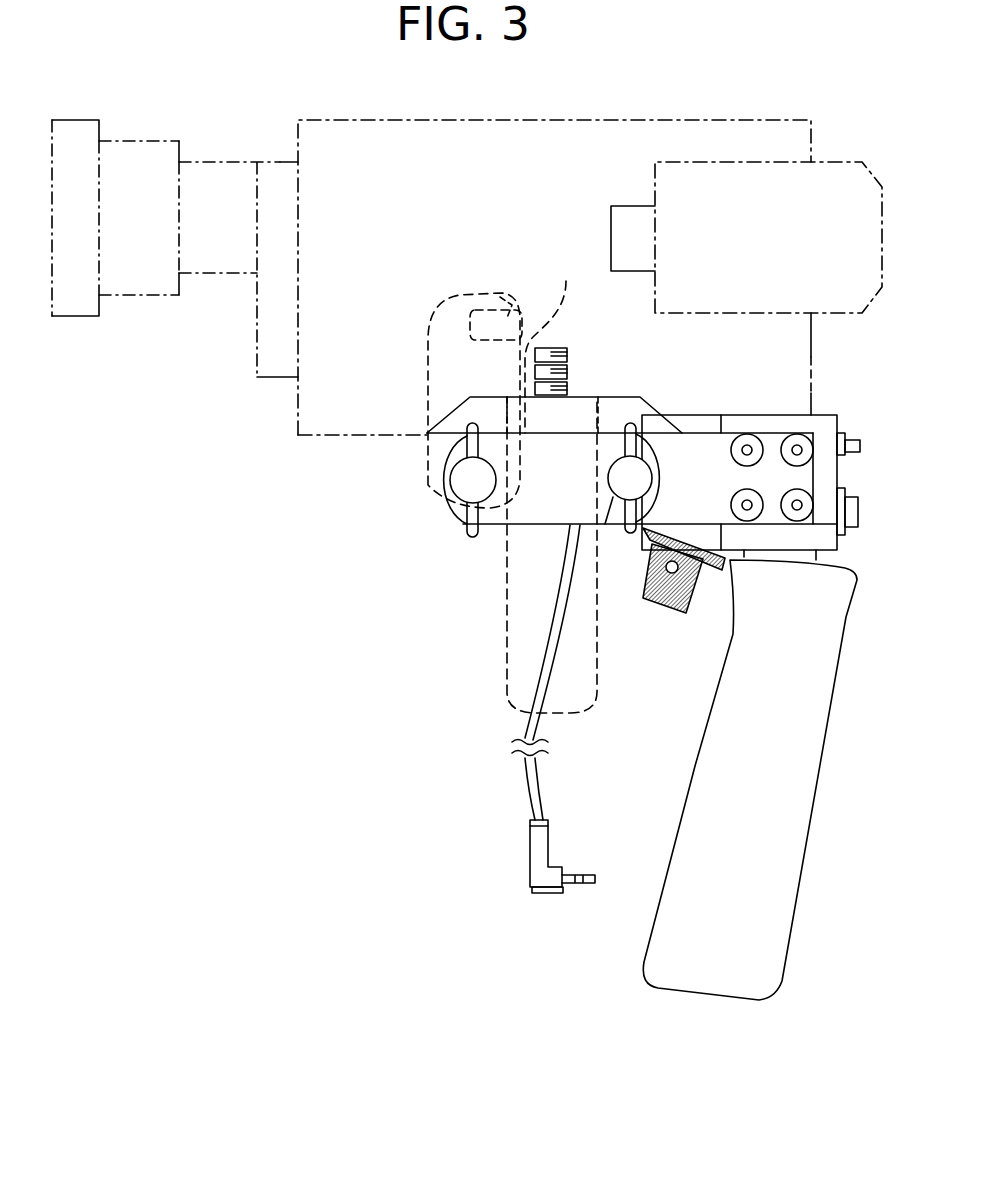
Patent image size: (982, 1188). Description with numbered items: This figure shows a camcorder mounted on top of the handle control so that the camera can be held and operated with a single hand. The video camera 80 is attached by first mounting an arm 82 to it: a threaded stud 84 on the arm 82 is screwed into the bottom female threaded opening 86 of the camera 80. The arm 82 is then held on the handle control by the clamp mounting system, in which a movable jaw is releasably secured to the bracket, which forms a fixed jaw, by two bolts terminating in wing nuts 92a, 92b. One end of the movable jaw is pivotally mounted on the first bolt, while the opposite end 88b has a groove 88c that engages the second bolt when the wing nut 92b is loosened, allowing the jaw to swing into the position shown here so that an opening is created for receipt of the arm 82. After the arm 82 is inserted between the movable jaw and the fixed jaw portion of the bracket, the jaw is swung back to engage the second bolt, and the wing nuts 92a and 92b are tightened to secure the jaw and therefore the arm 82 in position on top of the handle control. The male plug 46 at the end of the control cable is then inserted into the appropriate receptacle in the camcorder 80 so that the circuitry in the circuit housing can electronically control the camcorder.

The video camera 80 is at (445, 211).
The arm 82 is at (522, 607).
The threaded stud 84 is at (568, 372).
The female threaded opening 86 is at (553, 344).
The opposite end of movable jaw 88b is at (503, 296).
The groove 88c is at (507, 300).
The wing nut 92a is at (465, 521).
The wing nut 92b is at (633, 535).
The male plug 46 is at (542, 870).